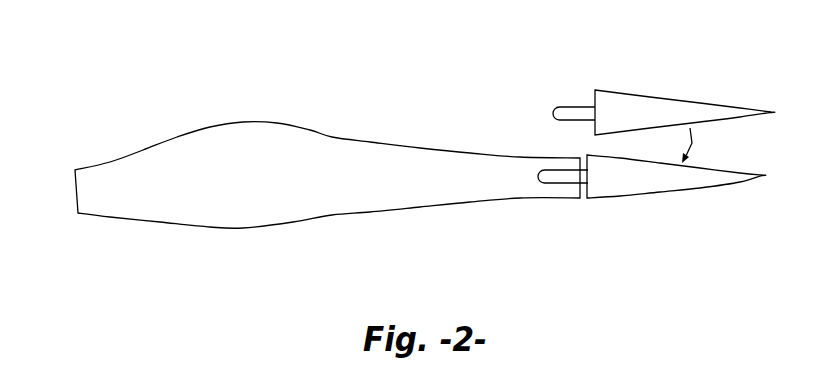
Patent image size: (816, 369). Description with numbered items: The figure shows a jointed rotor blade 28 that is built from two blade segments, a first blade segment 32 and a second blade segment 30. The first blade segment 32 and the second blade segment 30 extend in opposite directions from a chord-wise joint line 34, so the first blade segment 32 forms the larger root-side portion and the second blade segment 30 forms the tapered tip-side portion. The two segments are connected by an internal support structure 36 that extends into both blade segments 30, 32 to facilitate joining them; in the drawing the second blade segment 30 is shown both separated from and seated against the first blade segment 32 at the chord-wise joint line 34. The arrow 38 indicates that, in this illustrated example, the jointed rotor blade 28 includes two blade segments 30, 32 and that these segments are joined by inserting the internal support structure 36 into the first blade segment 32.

The jointed rotor blade 28 is at (76, 81).
The second blade segment 30 is at (650, 110).
The first blade segment 32 is at (163, 203).
The chord-wise joint line 34 is at (578, 200).
The internal support structure 36 is at (565, 107).
The arrow 38 is at (692, 143).